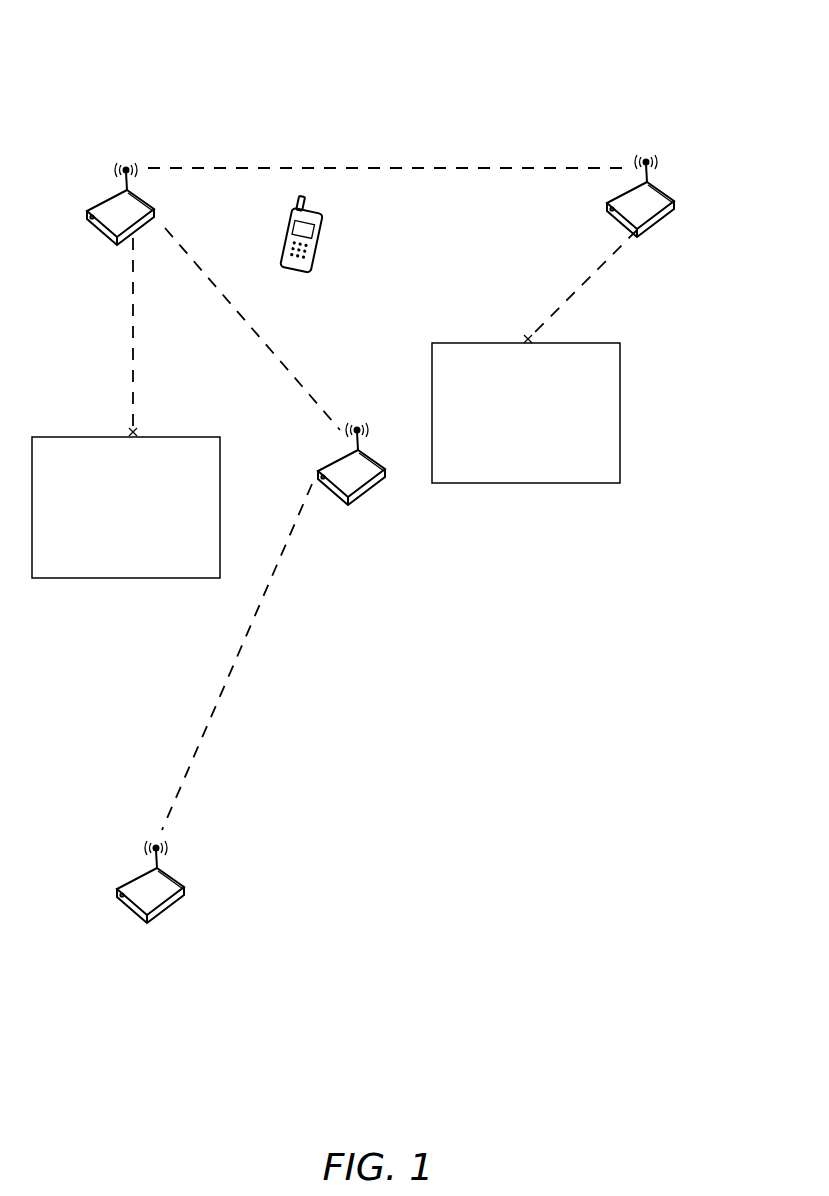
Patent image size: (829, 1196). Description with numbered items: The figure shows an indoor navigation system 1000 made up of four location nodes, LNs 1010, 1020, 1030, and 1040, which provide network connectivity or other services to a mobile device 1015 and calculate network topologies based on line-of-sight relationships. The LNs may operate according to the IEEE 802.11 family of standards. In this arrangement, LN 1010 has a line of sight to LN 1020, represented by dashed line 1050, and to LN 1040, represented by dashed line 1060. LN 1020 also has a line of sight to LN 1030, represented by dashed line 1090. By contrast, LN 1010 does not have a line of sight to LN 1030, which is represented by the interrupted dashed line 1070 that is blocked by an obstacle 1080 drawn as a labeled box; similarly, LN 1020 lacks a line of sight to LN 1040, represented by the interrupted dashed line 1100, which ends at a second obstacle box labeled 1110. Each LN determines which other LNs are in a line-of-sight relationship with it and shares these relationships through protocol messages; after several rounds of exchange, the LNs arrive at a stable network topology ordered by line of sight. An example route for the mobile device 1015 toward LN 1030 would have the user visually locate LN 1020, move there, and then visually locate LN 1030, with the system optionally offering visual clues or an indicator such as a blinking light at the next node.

The indoor navigation system 1000 is at (598, 38).
The location node 1010 is at (155, 213).
The mobile device 1015 is at (318, 252).
The location node 1020 is at (362, 446).
The location node 1030 is at (172, 858).
The location node 1040 is at (665, 195).
The dashed line 1050 is at (280, 356).
The dashed line 1060 is at (370, 168).
The interrupted dashed line 1070 is at (134, 390).
The obstacle 1080 is at (220, 470).
The dashed line 1090 is at (235, 682).
The interrupted dashed line 1100 is at (592, 292).
The obstacle 1110 is at (620, 414).